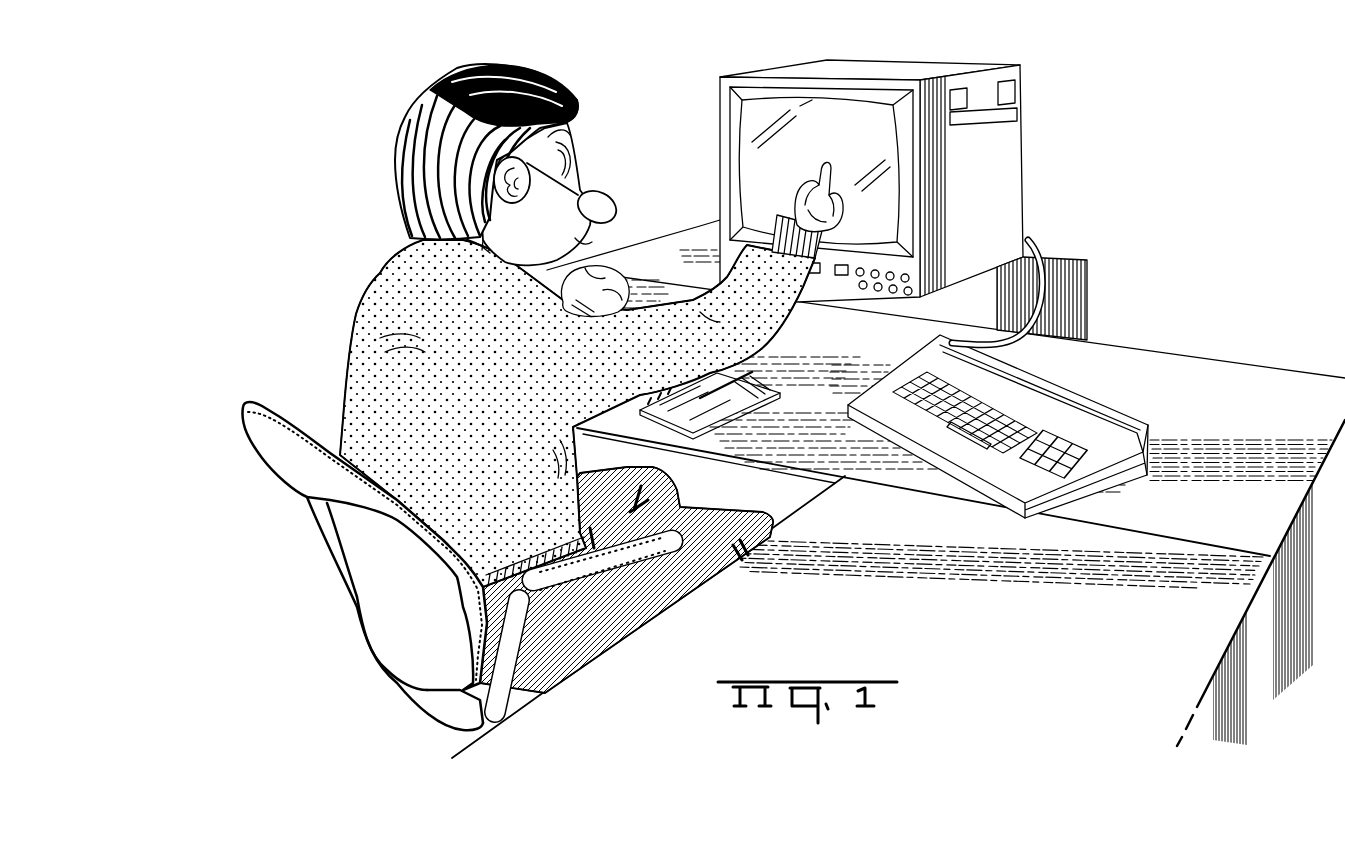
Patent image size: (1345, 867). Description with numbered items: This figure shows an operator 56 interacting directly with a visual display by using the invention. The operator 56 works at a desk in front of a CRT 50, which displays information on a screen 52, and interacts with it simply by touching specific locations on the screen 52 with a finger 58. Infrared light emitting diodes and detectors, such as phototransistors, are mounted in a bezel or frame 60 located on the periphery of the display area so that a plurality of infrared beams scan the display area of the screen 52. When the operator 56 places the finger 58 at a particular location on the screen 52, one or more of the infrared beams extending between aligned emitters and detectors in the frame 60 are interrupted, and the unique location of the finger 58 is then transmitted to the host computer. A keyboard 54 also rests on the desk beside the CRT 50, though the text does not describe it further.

The CRT 50 is at (1030, 168).
The screen 52 is at (743, 160).
The keyboard 54 is at (1102, 397).
The operator 56 is at (512, 64).
The finger 58 is at (826, 163).
The bezel or frame 60 is at (741, 129).